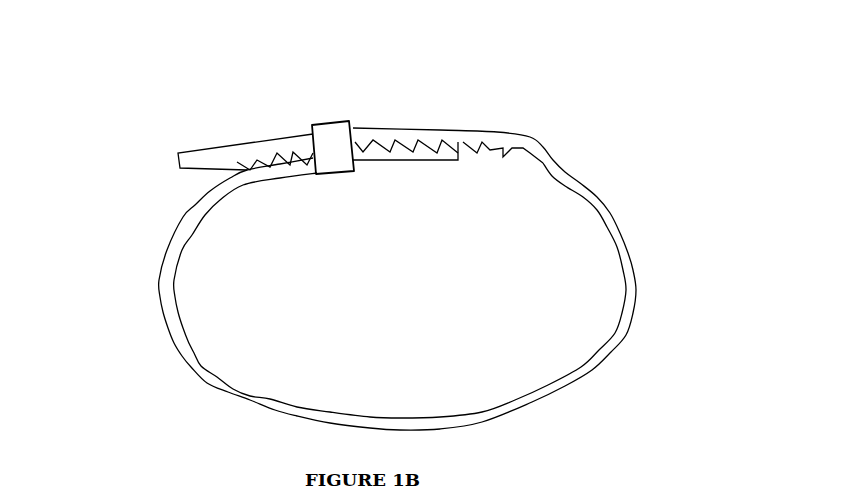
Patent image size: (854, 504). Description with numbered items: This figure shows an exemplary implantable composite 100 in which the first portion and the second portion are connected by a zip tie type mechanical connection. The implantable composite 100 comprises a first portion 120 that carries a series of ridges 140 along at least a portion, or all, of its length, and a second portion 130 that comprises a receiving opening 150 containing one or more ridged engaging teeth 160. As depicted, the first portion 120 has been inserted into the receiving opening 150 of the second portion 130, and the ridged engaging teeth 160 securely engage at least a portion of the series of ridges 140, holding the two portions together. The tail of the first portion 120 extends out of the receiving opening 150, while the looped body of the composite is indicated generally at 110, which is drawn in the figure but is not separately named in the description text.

The band device 100 is at (183, 67).
The band loop 110 is at (228, 397).
The strap tail end 120 is at (178, 156).
The strap teeth (tail) 130 is at (453, 157).
The exposed serrations 140 is at (488, 160).
The buckle 150 is at (333, 140).
The strap teeth (band side) 160 is at (432, 128).